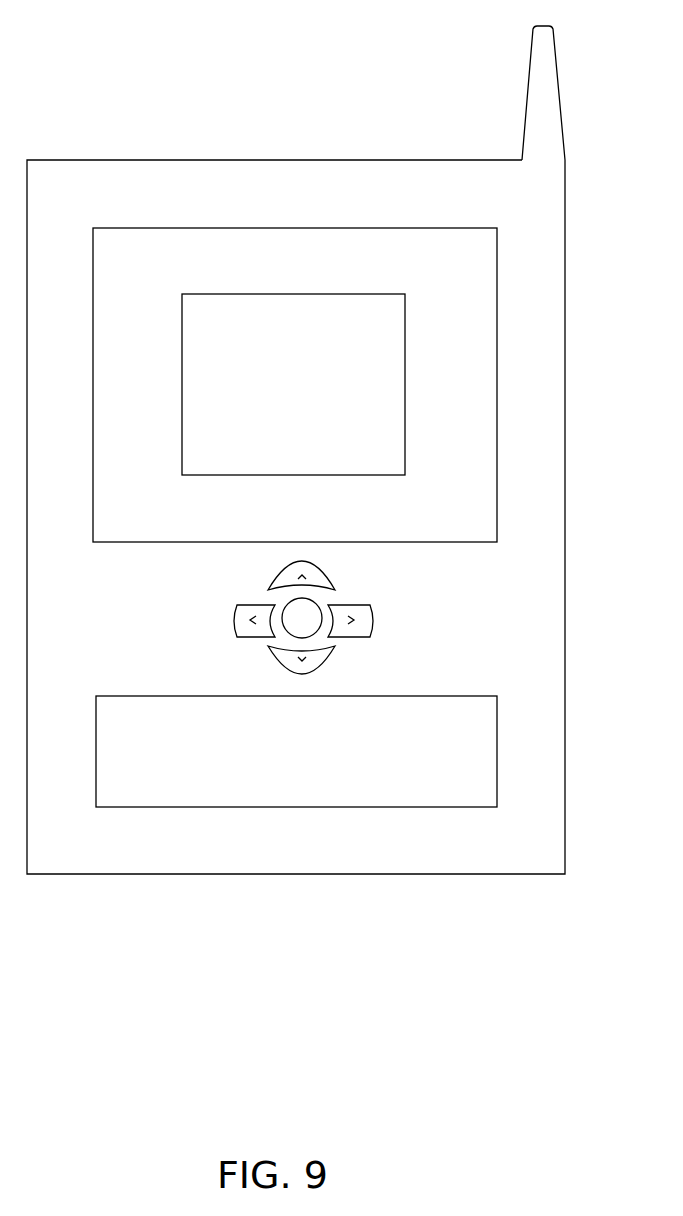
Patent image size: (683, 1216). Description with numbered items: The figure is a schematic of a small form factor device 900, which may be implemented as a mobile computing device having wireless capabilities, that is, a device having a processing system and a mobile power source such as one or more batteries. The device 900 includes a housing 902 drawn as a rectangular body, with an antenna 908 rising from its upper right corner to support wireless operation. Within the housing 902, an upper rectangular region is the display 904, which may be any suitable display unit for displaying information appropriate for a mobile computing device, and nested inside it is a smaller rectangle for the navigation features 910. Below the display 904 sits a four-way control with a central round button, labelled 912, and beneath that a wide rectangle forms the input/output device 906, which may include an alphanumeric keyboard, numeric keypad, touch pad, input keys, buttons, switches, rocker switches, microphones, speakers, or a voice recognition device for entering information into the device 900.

The small form factor device 900 is at (290, 1142).
The housing 902 is at (566, 503).
The display 904 is at (436, 228).
The input/output (I/O) device 906 is at (497, 722).
The antenna 908 is at (529, 73).
The navigation features 910 is at (350, 294).
The navigation control 912 is at (383, 609).